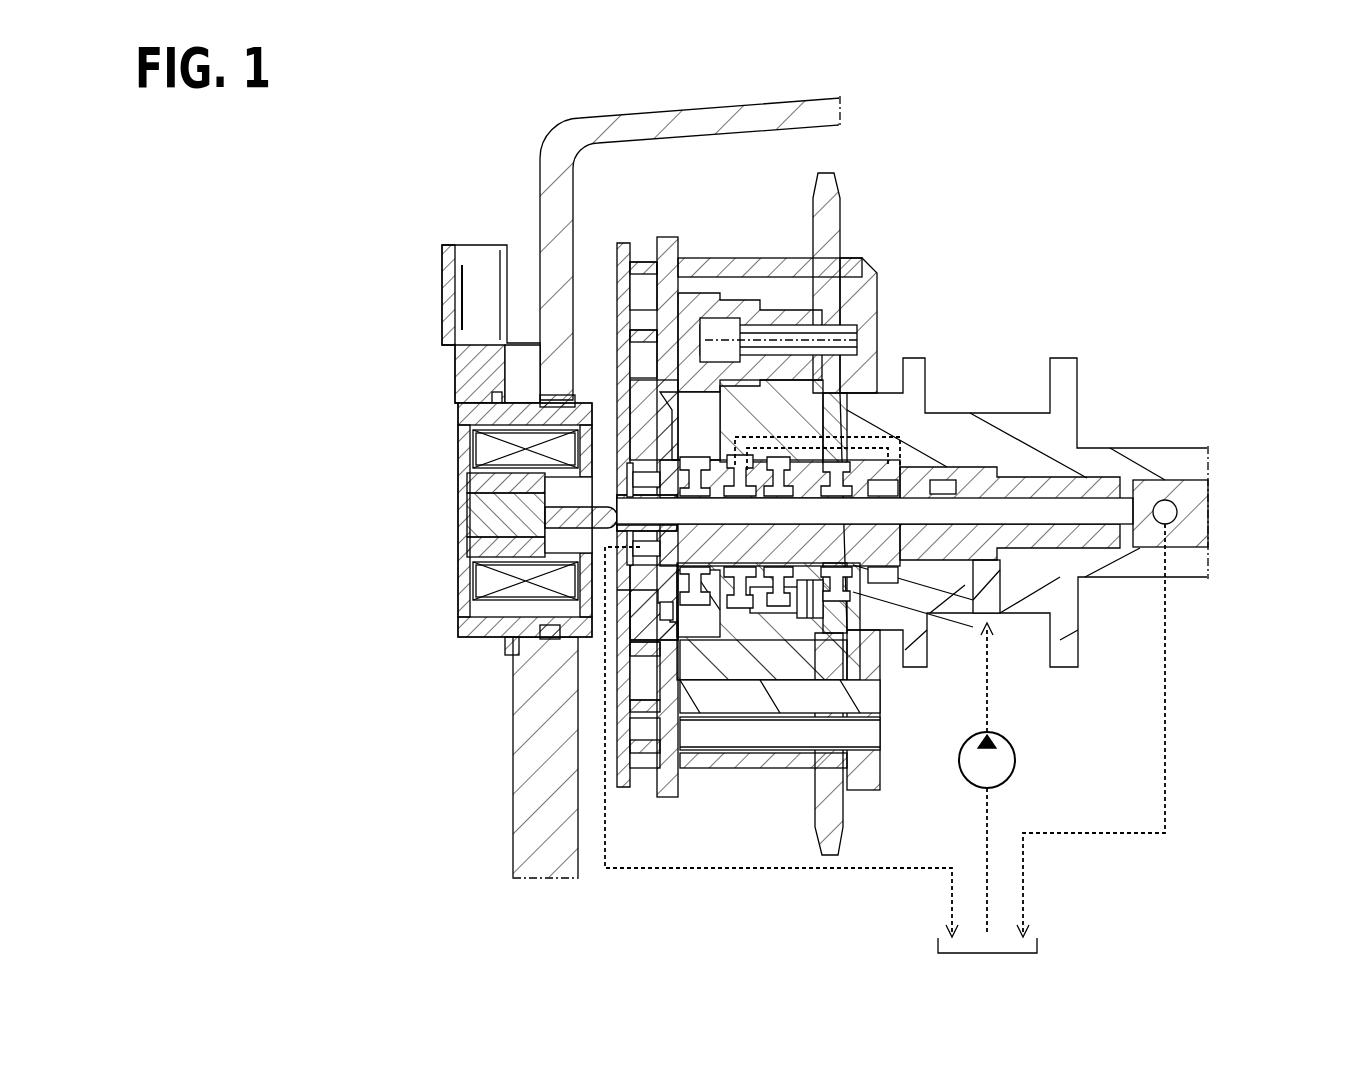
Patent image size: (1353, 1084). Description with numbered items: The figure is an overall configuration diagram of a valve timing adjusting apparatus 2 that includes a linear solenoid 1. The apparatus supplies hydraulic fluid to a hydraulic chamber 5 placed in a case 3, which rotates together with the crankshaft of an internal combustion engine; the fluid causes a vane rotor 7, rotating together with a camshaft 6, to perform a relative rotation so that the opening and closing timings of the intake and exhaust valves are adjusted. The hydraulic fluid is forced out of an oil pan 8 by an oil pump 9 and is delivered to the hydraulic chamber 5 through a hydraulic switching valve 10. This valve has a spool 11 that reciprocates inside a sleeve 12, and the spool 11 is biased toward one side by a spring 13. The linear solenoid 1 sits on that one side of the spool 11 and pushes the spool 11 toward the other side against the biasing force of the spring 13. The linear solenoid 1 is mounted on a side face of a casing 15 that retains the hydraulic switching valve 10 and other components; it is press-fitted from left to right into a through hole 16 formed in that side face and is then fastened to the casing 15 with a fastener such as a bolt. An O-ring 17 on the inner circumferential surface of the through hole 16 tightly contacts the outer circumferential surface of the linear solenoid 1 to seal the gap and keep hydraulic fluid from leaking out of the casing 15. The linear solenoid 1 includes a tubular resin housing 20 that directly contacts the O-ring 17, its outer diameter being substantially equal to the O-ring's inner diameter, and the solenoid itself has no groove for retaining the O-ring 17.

The linear solenoid 1 is at (428, 223).
The valve timing adjusting apparatus 2 is at (1185, 185).
The case 3 is at (759, 268).
The hydraulic chamber 5 is at (729, 692).
The camshaft 6 is at (1190, 458).
The vane rotor 7 is at (775, 663).
The oil pan 8 is at (1037, 947).
The oil pump 9 is at (1005, 767).
The hydraulic switching valve 10 is at (640, 578).
The spool 11 is at (632, 403).
The sleeve 12 is at (1100, 478).
The spring 13 is at (933, 490).
The casing 15 is at (678, 125).
The through hole 16 is at (518, 650).
The O-ring 17 is at (545, 640).
The housing 20 is at (563, 407).